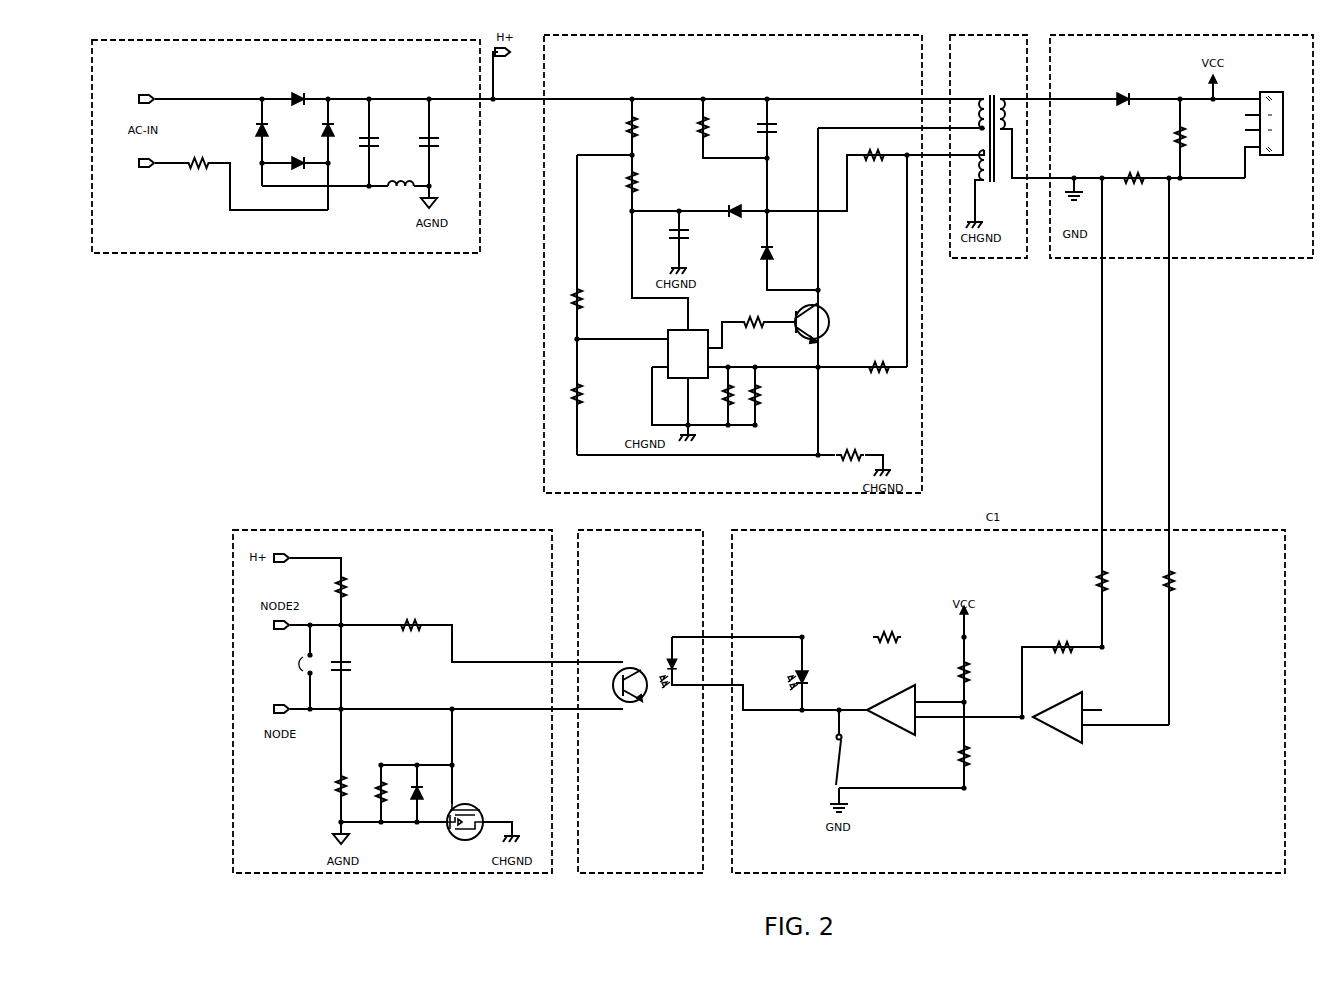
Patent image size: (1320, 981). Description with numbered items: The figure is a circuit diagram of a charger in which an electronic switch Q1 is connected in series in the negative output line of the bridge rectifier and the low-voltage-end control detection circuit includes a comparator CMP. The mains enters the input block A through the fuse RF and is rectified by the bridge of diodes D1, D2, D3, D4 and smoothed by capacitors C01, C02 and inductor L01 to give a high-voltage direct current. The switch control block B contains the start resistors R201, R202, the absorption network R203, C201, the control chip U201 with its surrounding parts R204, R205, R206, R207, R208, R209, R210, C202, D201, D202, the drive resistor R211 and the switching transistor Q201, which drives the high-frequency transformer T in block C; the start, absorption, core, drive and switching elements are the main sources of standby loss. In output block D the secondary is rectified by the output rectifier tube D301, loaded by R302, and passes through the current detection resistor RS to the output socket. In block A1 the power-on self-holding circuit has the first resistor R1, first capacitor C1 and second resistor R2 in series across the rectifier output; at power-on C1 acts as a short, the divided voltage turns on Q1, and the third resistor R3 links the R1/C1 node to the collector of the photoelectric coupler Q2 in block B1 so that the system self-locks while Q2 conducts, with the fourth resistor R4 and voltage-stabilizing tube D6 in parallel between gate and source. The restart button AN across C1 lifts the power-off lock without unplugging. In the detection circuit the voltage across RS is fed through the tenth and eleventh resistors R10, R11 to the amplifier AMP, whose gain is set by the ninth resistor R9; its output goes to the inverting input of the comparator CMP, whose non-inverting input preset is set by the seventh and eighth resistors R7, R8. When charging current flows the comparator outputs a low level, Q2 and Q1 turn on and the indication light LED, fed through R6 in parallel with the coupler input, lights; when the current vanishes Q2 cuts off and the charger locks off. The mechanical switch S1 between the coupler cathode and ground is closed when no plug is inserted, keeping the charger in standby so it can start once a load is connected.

The AC input rectifier and filter unit A is at (286, 137).
The switching power control unit B is at (733, 255).
The transformer unit C is at (988, 138).
The USB output unit D is at (1181, 138).
The sensing and protection unit A1 is at (392, 692).
The optocoupler isolation unit B1 is at (640, 692).
The fuse resistor RF is at (196, 162).
The rectifier diode D1 is at (297, 90).
The rectifier diode D2 is at (297, 155).
The rectifier diode D3 is at (339, 129).
The rectifier diode D4 is at (272, 129).
The filter capacitor C01 is at (381, 138).
The filter capacitor C02 is at (442, 138).
The filter inductor L01 is at (401, 176).
The start resistor R201 is at (650, 128).
The start resistor R202 is at (650, 183).
The absorption resistor R203 is at (720, 128).
The resistor R204 is at (873, 163).
The resistor R205 is at (593, 300).
The resistor R206 is at (593, 395).
The resistor R207 is at (712, 396).
The resistor R208 is at (771, 396).
The resistor R209 is at (878, 359).
The resistor R210 is at (850, 445).
The drive resistor R211 is at (752, 314).
The absorption capacitor C201 is at (781, 128).
The capacitor C202 is at (697, 234).
The diode D201 is at (734, 203).
The diode D202 is at (784, 252).
The control chip U201 is at (688, 354).
The switching transistor Q201 is at (832, 322).
The high-frequency transformer T is at (1083, 144).
The output rectifier tube D301 is at (1122, 109).
The resistor R302 is at (1197, 138).
The current detection resistor RS is at (1133, 171).
The restart button AN is at (287, 664).
The first resistor R1 is at (350, 588).
The second resistor R2 is at (350, 787).
The third resistor R3 is at (410, 617).
The fourth resistor R4 is at (390, 793).
The first capacitor C1 is at (350, 668).
The voltage-stabilizing tube D6 is at (428, 789).
The electronic switch Q1 is at (465, 832).
The photoelectric coupler Q2 is at (630, 664).
The indication light LED is at (818, 678).
The mechanical switch S1 is at (808, 747).
The resistor R6 is at (887, 630).
The seventh resistor R7 is at (973, 673).
The eighth resistor R8 is at (973, 757).
The ninth resistor R9 is at (1062, 640).
The tenth resistor R10 is at (1117, 582).
The eleventh resistor R11 is at (1184, 582).
The comparator CMP is at (900, 711).
The amplifier AMP is at (1075, 719).